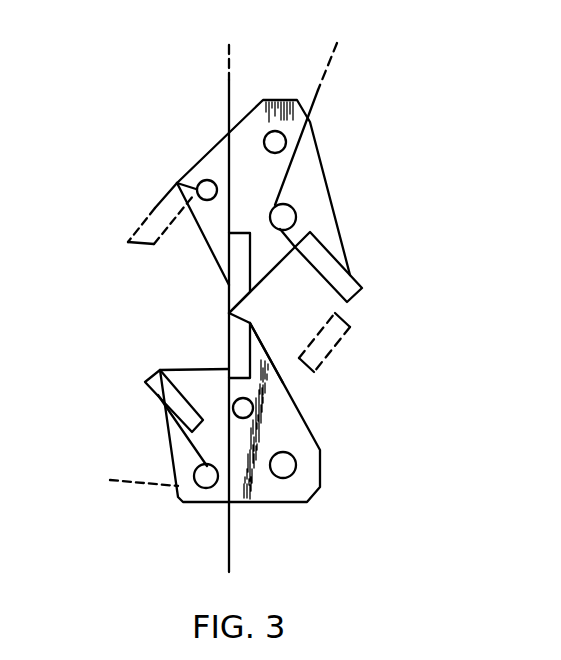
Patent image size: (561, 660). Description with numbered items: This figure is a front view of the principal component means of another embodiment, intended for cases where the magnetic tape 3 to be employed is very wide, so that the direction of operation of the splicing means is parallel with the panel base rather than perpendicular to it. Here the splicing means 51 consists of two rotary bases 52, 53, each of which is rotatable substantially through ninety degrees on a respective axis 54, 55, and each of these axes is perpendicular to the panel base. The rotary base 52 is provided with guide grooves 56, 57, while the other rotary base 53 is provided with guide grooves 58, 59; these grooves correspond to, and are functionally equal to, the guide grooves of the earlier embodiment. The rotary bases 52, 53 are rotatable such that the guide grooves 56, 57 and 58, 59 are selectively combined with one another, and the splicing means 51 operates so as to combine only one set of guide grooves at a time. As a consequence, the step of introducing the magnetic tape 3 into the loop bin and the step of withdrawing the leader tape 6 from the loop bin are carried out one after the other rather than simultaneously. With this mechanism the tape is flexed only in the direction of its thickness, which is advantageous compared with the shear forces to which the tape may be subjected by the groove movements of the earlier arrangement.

The magnetic tape 3 is at (158, 486).
The leader tape 6 is at (317, 97).
The splicing means 51 is at (333, 371).
The rotary base 52 is at (313, 463).
The rotary base 53 is at (322, 203).
The axis 54 is at (284, 476).
The axis 55 is at (277, 131).
The guide groove 56 is at (241, 362).
The guide groove 57 is at (158, 391).
The guide groove 58 is at (355, 280).
The guide groove 59 is at (237, 287).